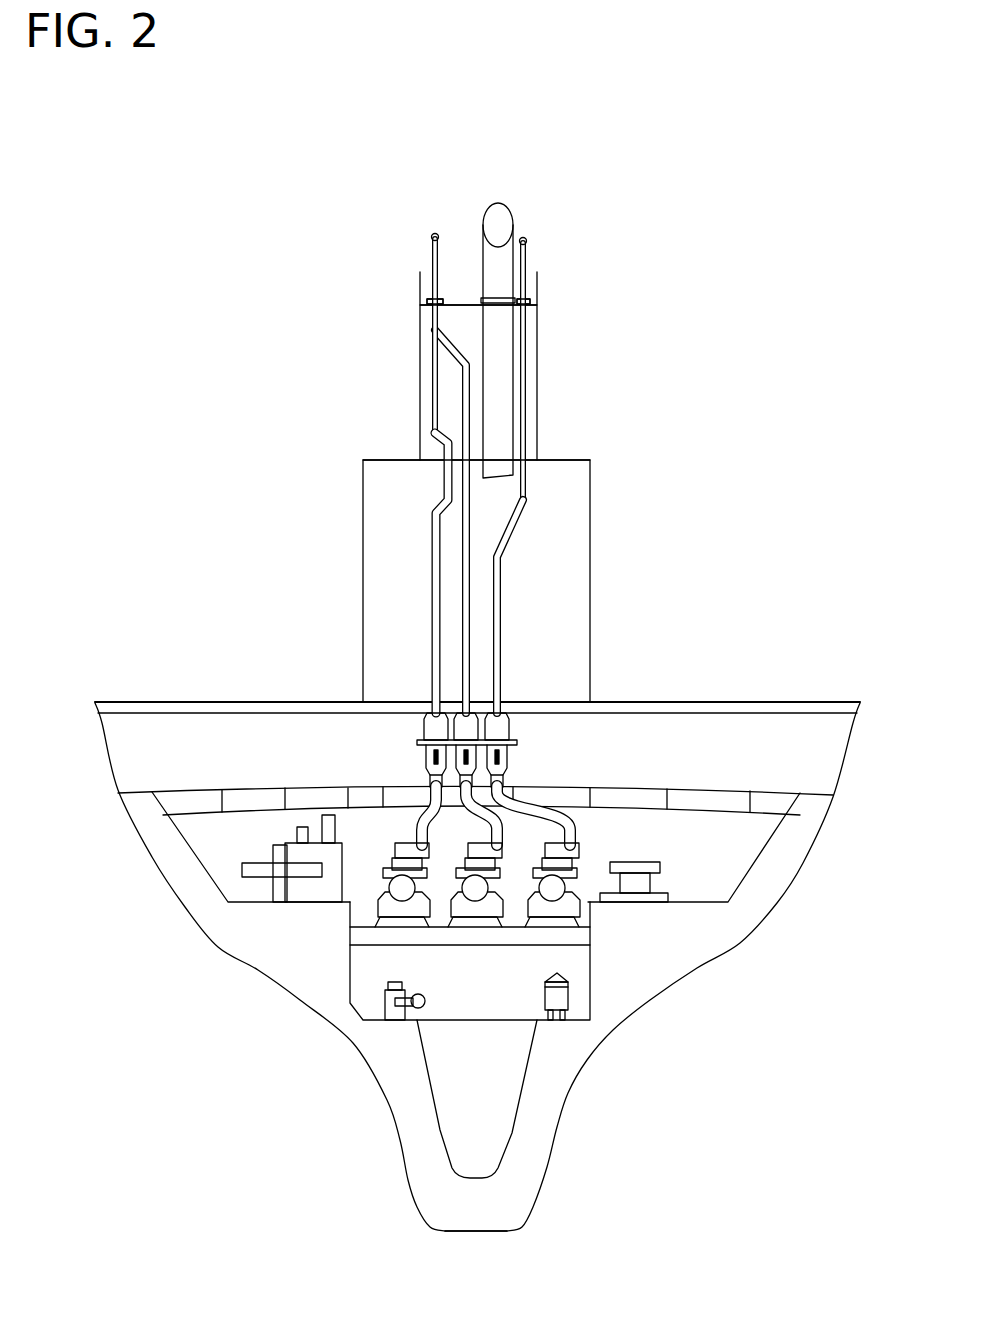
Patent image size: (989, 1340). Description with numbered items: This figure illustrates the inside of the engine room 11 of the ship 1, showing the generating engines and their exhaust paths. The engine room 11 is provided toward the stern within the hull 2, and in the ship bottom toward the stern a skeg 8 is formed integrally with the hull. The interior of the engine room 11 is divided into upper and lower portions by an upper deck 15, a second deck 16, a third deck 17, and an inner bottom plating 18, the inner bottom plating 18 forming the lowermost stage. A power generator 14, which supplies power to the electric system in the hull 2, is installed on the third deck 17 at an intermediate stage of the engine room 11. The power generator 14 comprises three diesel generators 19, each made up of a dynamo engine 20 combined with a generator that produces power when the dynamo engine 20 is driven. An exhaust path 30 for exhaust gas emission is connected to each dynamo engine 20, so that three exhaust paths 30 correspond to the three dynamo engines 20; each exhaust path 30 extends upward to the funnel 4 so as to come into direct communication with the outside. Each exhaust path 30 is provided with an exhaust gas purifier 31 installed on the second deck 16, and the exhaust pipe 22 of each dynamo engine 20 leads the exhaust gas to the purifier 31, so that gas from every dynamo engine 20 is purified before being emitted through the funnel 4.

The ship 1 is at (480, 714).
The hull 2 is at (781, 931).
The funnel 4 is at (537, 353).
The skeg 8 is at (410, 1182).
The engine room 11 is at (672, 723).
The power generator 14 is at (592, 860).
The upper deck 15 is at (280, 702).
The second deck 16 is at (315, 793).
The third deck 17 is at (370, 930).
The inner bottom plating 18 is at (482, 1177).
The diesel generator 19 is at (486, 960).
The dynamo engine 20 is at (475, 913).
The exhaust pipe 22 is at (417, 817).
The exhaust path 30 is at (448, 594).
The exhaust gas purifier 31 is at (490, 711).